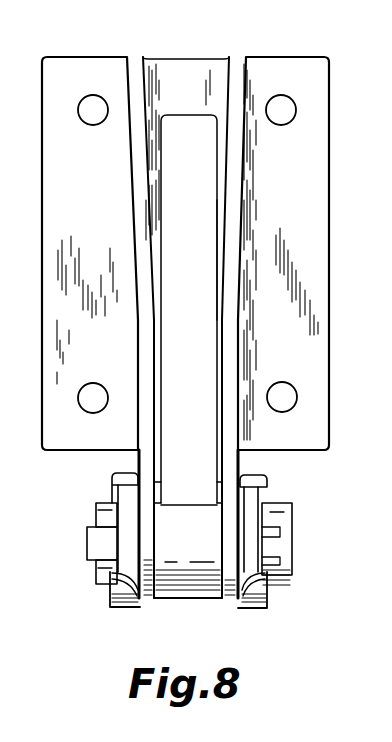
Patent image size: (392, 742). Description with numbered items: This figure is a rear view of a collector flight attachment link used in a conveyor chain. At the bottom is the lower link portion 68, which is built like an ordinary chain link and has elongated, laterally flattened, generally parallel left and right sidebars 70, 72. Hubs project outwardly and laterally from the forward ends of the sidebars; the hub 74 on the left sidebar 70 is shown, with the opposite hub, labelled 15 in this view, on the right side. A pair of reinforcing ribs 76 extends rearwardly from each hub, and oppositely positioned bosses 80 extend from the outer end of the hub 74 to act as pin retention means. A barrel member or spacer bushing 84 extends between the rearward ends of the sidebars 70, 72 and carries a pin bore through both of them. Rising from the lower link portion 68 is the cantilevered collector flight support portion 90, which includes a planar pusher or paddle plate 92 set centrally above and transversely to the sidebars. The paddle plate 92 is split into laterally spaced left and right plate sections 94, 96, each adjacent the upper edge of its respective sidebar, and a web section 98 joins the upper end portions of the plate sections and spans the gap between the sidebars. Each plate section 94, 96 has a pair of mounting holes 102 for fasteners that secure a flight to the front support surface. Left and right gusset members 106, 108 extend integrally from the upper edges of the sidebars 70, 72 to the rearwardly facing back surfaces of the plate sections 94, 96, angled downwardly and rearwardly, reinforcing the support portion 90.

The lower link portion 68 is at (250, 609).
The left sidebar 70 is at (142, 608).
The right sidebar 72 is at (228, 608).
The hub 74 is at (110, 497).
The right cap 15 is at (292, 508).
The reinforcing ribs 76 is at (108, 524).
The bosses 80 is at (92, 540).
The barrel member or spacer bushing 84 is at (196, 506).
The collector flight support portion 90 is at (338, 176).
The paddle plate 92 is at (339, 337).
The left plate section 94 is at (62, 69).
The right plate section 96 is at (326, 61).
The web section 98 is at (198, 62).
The mounting holes 102 is at (106, 108).
The left gusset member 106 is at (145, 229).
The right gusset member 108 is at (224, 289).